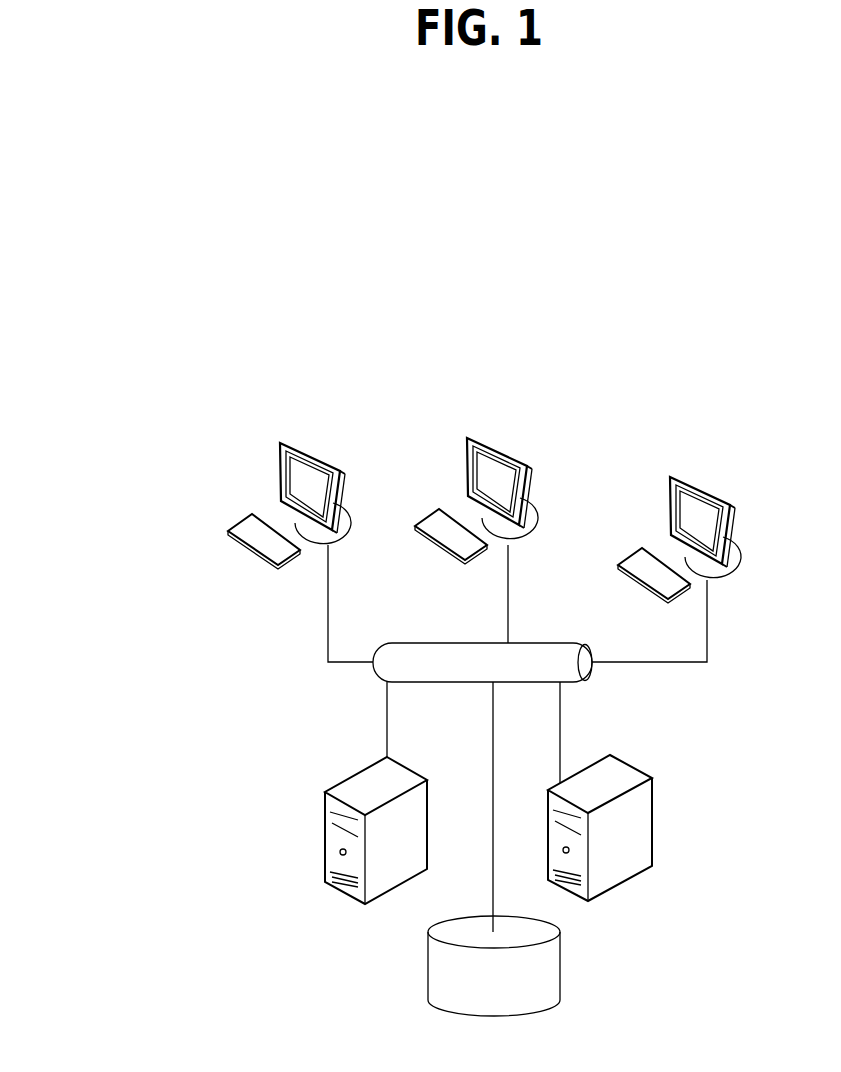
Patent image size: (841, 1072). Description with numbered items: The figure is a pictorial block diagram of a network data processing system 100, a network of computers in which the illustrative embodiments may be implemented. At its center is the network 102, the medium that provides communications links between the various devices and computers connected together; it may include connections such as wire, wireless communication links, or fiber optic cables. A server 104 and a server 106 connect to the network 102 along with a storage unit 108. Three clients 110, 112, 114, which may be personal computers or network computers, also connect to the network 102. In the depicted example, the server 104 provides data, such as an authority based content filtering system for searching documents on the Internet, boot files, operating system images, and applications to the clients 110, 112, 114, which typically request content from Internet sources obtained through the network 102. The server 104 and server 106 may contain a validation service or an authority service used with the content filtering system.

The network data processing system 100 is at (82, 214).
The network 102 is at (517, 738).
The server 104 is at (653, 808).
The server 106 is at (326, 830).
The storage unit 108 is at (428, 966).
The client 110 is at (300, 443).
The client 112 is at (500, 448).
The client 114 is at (677, 477).